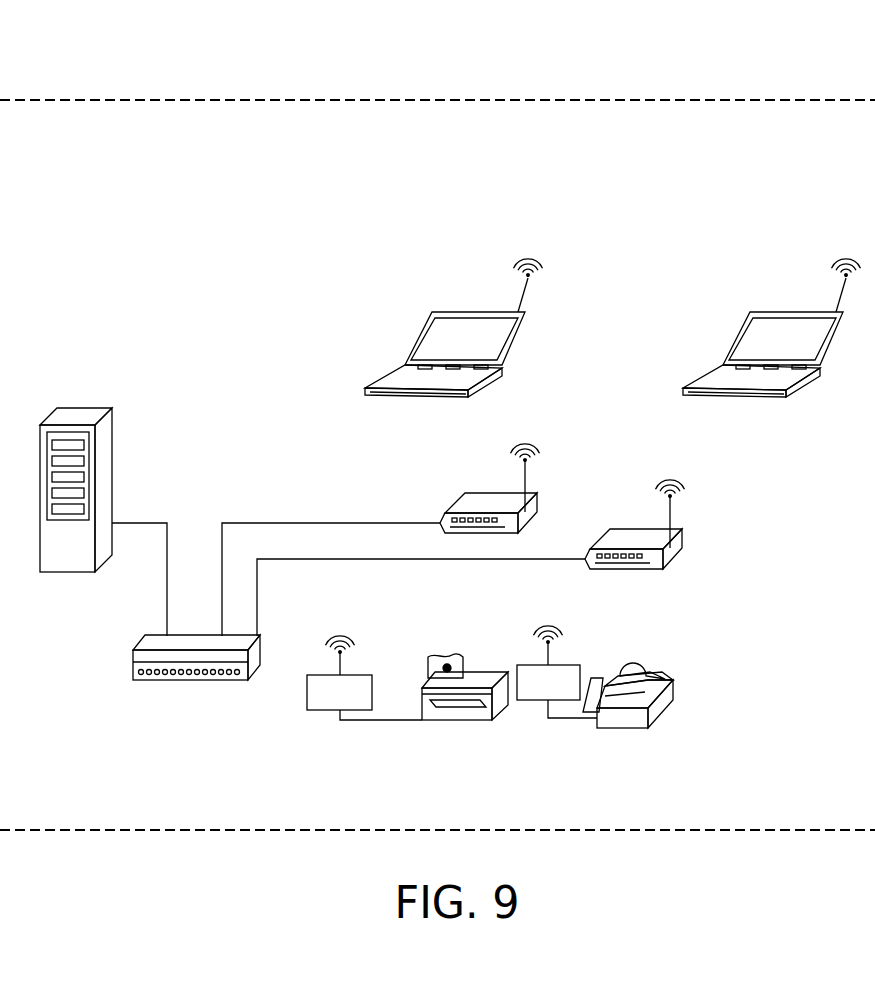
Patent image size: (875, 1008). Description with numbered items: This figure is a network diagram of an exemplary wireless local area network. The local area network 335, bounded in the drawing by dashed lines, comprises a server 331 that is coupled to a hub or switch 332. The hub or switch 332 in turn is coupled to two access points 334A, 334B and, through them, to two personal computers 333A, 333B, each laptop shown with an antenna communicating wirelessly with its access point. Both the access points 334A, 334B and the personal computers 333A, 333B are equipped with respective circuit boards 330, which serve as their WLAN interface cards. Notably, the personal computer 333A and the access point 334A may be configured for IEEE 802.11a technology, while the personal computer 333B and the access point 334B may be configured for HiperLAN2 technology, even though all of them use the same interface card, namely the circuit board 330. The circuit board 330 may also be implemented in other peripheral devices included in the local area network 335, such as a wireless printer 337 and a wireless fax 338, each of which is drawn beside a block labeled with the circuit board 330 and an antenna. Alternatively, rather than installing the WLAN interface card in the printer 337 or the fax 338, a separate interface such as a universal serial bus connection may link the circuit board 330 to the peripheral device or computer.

The local area network 335 is at (457, 100).
The server 331 is at (77, 417).
The personal computer 333A is at (480, 310).
The personal computer 333B is at (800, 310).
The access point 334A is at (487, 502).
The access point 334B is at (633, 570).
The hub or switch 332 is at (197, 682).
The circuit board 330 is at (322, 703).
The wireless printer 337 is at (465, 720).
The wireless fax 338 is at (622, 730).